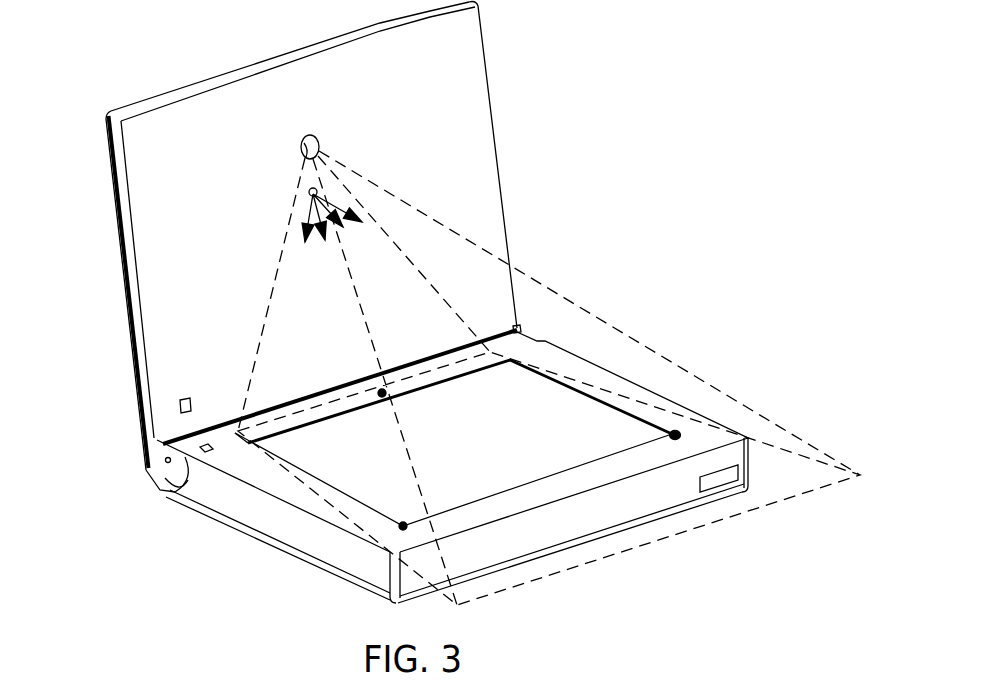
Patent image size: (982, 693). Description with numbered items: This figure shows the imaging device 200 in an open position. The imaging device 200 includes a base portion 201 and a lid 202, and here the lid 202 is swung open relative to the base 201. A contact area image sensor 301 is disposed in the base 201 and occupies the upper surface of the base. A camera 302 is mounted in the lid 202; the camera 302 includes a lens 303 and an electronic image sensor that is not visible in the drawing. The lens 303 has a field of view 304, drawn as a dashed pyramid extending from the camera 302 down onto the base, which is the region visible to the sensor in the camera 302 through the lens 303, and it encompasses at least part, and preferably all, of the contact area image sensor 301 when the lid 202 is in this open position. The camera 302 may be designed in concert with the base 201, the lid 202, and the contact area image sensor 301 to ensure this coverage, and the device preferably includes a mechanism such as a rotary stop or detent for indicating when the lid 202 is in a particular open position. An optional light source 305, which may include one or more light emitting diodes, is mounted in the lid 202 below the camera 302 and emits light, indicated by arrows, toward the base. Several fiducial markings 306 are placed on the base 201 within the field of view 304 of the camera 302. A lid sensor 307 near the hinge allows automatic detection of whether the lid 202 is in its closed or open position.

The imaging device 200 is at (683, 125).
The base portion 201 is at (287, 540).
The lid 202 is at (501, 196).
The contact area image sensor 301 is at (485, 453).
The camera 302 is at (320, 138).
The lens 303 is at (302, 148).
The field of view 304 is at (628, 549).
The light source 305 is at (309, 192).
The fiducial markings 306 is at (380, 391).
The lid sensor 307 is at (180, 407).